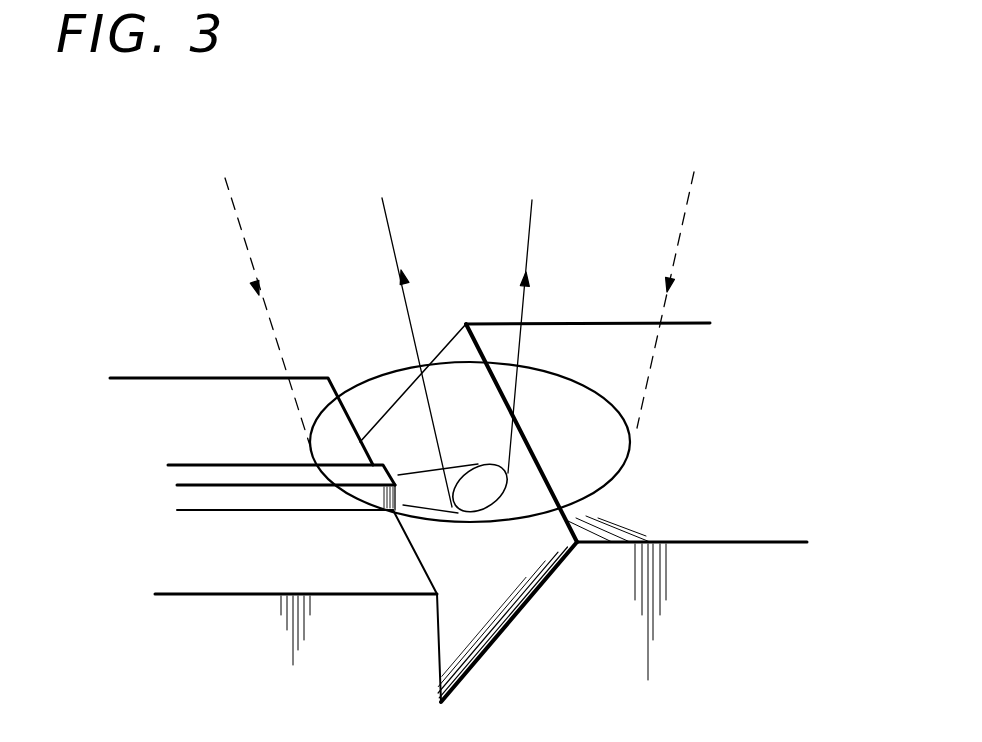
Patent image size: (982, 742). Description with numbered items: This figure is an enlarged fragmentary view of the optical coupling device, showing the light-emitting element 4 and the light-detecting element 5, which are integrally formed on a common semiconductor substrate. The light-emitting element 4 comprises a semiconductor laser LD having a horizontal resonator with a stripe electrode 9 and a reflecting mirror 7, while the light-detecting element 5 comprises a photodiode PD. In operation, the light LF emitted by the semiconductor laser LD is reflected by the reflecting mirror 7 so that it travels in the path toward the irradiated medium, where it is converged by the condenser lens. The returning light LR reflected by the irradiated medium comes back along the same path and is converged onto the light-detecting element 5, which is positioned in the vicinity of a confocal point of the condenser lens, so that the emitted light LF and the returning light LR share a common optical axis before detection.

The light-emitting element 4 is at (108, 178).
The reflecting mirror 7 is at (418, 440).
The stripe electrode 9 is at (236, 473).
The semiconductor laser LD is at (191, 447).
The emitted light LF is at (502, 232).
The returning light LR is at (655, 226).
The light-detecting element 5 is at (658, 422).